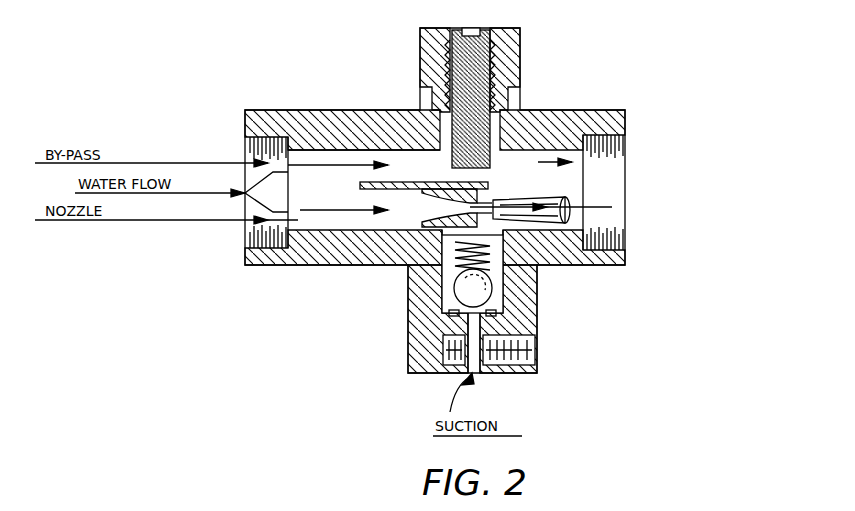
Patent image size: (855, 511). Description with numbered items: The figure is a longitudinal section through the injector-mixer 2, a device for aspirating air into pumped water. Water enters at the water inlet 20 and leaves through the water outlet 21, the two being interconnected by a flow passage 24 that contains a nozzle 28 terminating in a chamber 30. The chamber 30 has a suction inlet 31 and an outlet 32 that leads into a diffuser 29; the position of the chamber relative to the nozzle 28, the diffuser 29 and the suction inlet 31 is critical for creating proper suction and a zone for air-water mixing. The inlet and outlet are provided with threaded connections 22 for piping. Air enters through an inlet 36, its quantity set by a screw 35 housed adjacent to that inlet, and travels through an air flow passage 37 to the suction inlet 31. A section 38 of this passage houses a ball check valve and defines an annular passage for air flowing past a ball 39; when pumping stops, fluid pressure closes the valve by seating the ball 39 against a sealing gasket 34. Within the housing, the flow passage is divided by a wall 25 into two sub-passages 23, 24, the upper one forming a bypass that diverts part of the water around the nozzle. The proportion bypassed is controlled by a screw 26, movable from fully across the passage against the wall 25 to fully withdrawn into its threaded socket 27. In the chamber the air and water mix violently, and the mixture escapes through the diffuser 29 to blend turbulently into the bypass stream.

The injector-mixer 2 is at (650, 66).
The water inlet 20 is at (250, 152).
The water outlet 21 is at (625, 215).
The threaded connections 22 is at (250, 232).
The bypass sub-passage 23 is at (358, 152).
The flow passage 24 is at (353, 232).
The wall 25 is at (360, 186).
The screw 26 is at (463, 28).
The threaded socket 27 is at (488, 62).
The nozzle 28 is at (417, 228).
The diffuser 29 is at (558, 203).
The chamber 30 is at (493, 193).
The suction inlet 31 is at (490, 236).
The outlet 32 is at (510, 197).
The sealing gasket 34 is at (455, 312).
The screw 35 is at (535, 355).
The inlet 36 is at (480, 372).
The air flow passage 37 is at (503, 315).
The section housing ball check valve 38 is at (430, 279).
The ball 39 is at (495, 283).